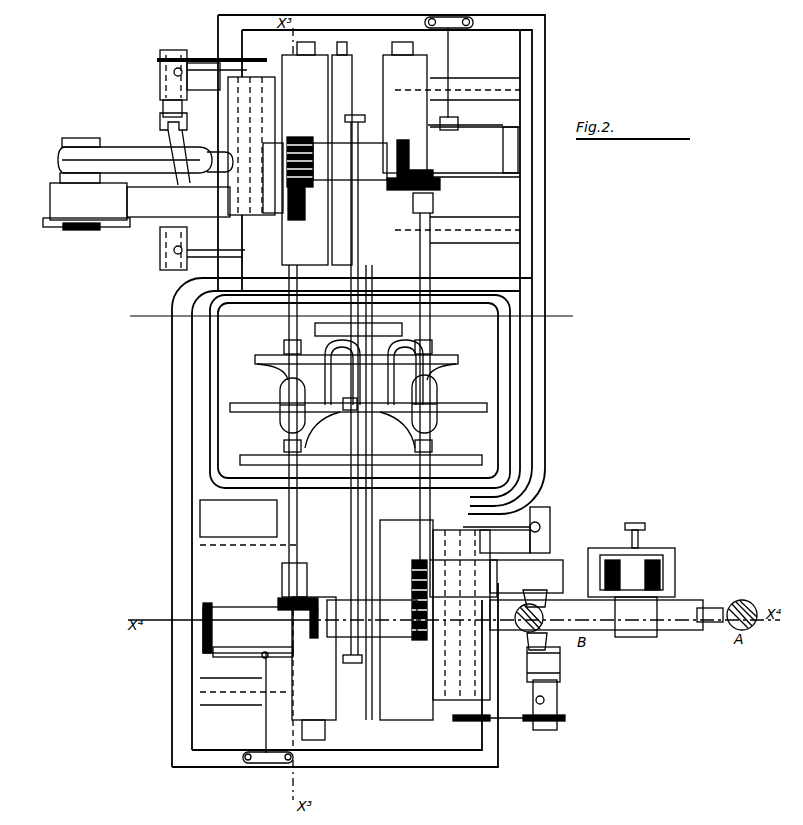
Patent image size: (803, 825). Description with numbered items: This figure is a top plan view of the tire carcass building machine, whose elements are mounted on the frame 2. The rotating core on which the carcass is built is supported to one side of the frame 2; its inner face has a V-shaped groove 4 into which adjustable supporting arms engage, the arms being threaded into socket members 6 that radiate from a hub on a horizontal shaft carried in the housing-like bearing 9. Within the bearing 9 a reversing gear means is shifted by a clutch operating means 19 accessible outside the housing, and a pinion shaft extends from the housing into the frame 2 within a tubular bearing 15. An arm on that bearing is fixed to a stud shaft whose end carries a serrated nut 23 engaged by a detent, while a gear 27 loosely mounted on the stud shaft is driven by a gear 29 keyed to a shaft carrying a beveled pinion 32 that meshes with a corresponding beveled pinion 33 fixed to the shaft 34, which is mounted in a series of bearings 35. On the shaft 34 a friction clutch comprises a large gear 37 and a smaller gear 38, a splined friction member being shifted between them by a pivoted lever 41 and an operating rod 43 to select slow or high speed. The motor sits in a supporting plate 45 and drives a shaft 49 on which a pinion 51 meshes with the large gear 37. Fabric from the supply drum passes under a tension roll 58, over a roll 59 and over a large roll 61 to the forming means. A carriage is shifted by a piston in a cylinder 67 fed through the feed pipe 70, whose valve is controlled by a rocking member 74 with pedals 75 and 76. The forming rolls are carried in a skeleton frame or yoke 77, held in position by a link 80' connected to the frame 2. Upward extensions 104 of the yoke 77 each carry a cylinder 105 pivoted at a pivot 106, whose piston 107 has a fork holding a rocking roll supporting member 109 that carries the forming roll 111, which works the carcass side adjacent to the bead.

The frame 2 is at (347, 738).
The V-shaped groove 4 is at (718, 624).
The socket members 6 is at (690, 628).
The bearing 9 is at (663, 558).
The tubular bearing 15 is at (148, 217).
The clutch operating means 19 is at (647, 536).
The nut 23 is at (525, 619).
The gear 27 is at (297, 135).
The gear 29 is at (318, 143).
The beveled pinion 32 is at (413, 147).
The beveled pinion 33 is at (430, 174).
The shaft 34 is at (284, 333).
The bearings 35 is at (282, 572).
The large gear 37 is at (250, 465).
The smaller gear 38 is at (262, 368).
The pivoted lever 41 is at (242, 415).
The operating rod 43 is at (364, 394).
The supporting plate 45 is at (283, 420).
The shaft 49 is at (396, 430).
The pinion 51 is at (342, 372).
The tension roll 58 is at (320, 328).
The roll 59 is at (343, 72).
The large roll 61 is at (262, 113).
The cylinder 67 is at (476, 170).
The feed pipe 70 is at (537, 633).
The rocking member 74 is at (262, 764).
The pedal 75 is at (290, 764).
The pedal 76 is at (246, 764).
The skeleton frame or yoke 77 is at (344, 464).
The link 80' is at (358, 386).
The upward extensions 104 is at (204, 77).
The cylinder 105 is at (163, 84).
The pivot 106 is at (163, 70).
The piston 107 is at (553, 673).
The rocking roll supporting member 109 is at (557, 653).
The forming roll 111 is at (531, 664).